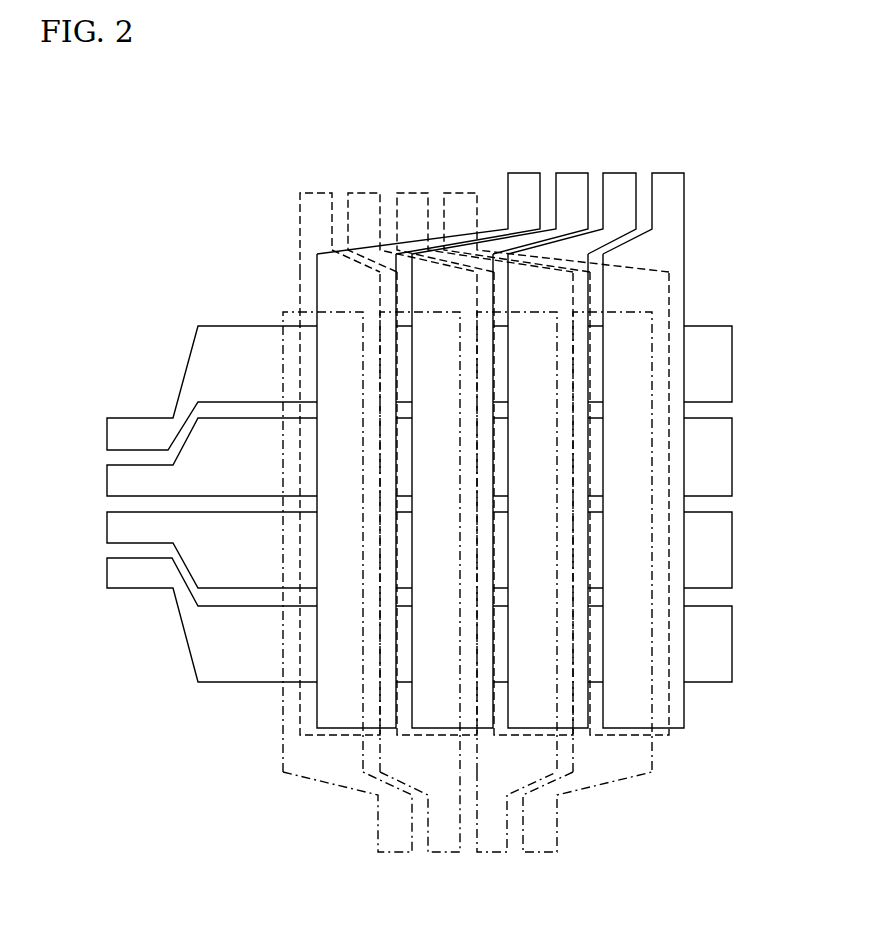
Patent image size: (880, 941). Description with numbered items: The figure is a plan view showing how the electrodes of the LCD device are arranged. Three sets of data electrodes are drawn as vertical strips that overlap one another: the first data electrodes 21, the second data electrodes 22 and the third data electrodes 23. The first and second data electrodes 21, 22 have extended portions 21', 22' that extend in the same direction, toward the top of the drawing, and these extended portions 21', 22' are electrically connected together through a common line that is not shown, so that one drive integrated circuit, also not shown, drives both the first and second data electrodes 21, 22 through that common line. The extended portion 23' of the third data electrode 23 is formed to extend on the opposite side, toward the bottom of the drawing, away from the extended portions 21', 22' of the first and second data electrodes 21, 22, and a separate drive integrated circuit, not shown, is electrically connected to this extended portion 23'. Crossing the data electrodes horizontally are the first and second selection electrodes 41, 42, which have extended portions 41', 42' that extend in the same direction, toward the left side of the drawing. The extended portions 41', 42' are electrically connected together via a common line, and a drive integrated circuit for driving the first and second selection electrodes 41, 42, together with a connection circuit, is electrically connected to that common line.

The first data electrode 21 is at (501, 182).
The extended portion of the first data electrode 21' is at (539, 419).
The second data electrode 22 is at (483, 191).
The extended portion of the second data electrode 22' is at (451, 422).
The third data electrode 23 is at (467, 845).
The extended portion of the third data electrode 23' is at (467, 615).
The first selection electrode 41 is at (369, 504).
The second selection electrode 42 is at (409, 504).
The extended portion of the first selection electrode 41' is at (202, 504).
The extended portion of the second selection electrode 42' is at (212, 504).